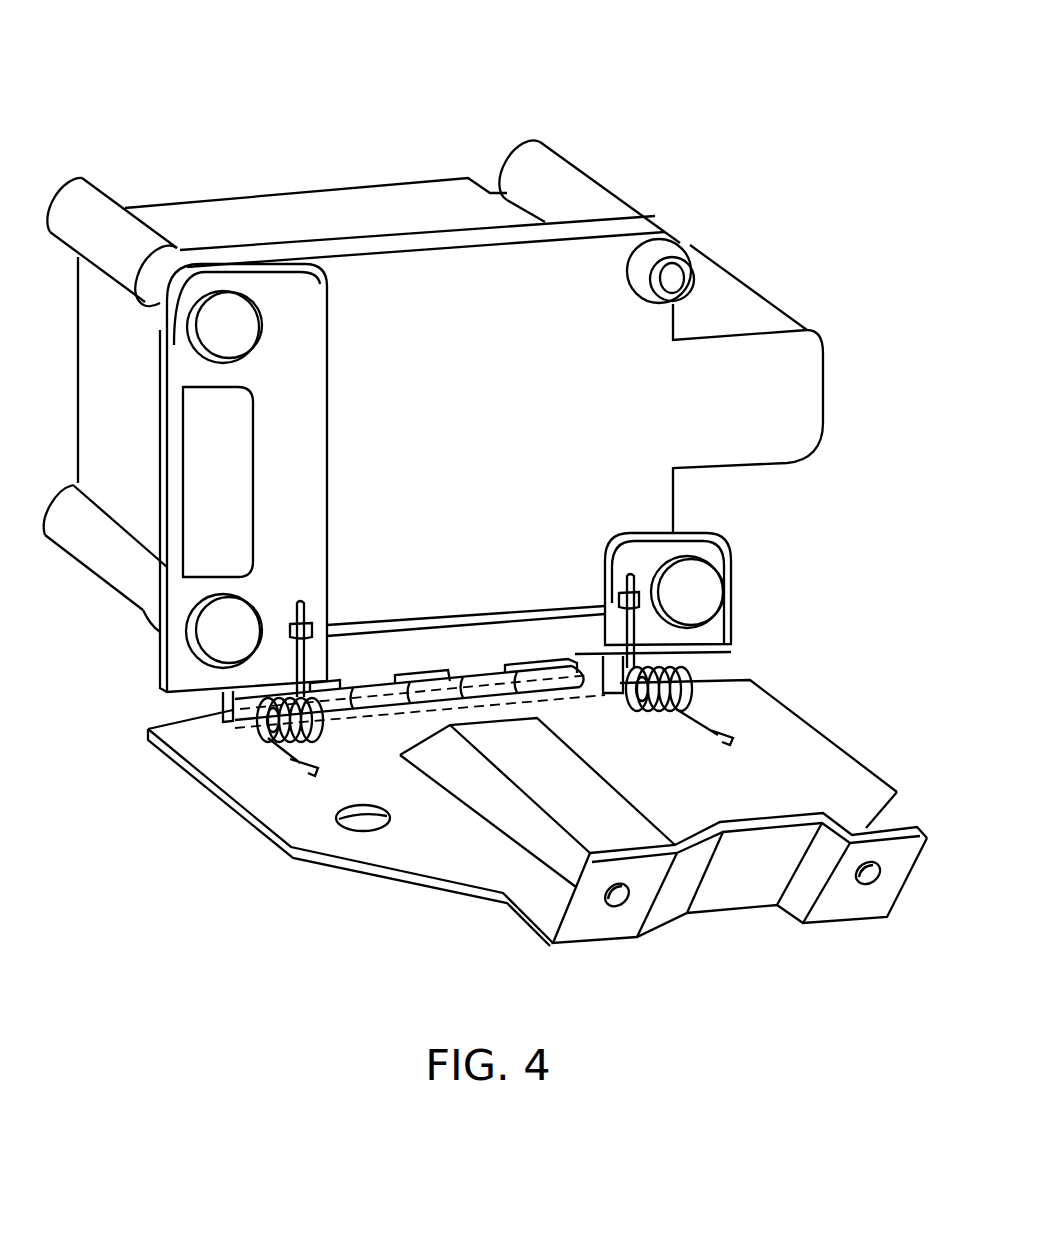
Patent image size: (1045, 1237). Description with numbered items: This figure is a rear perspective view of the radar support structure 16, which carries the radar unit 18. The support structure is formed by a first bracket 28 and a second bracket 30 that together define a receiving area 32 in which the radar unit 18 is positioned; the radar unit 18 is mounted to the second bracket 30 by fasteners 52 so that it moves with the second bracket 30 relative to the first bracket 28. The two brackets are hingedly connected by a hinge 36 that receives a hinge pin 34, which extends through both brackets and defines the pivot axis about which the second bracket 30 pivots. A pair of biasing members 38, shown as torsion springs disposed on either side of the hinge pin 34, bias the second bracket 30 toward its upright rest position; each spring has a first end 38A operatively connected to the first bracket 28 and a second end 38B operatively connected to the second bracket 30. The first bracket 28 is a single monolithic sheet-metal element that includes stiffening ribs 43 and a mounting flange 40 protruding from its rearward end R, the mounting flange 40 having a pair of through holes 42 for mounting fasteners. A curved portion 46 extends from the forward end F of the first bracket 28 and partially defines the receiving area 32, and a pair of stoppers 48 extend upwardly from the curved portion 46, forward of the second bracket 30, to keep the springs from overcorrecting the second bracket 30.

The radar support structure 16 is at (588, 97).
The radar unit 18 is at (337, 188).
The first bracket 28 is at (248, 846).
The second bracket 30 is at (365, 440).
The receiving area 32 is at (178, 730).
The hinge pin 34 is at (420, 668).
The hinge 36 is at (476, 664).
The biasing member 38 is at (262, 733).
The first end 38A is at (314, 763).
The second end 38B is at (312, 630).
The mounting flange 40 is at (747, 872).
The through holes 42 is at (617, 901).
The stiffening ribs 43 is at (487, 792).
The curved portion 46 is at (208, 743).
The stopper 48 is at (245, 701).
The fasteners 52 is at (233, 332).
The forward end F is at (150, 771).
The rearward end R is at (532, 936).